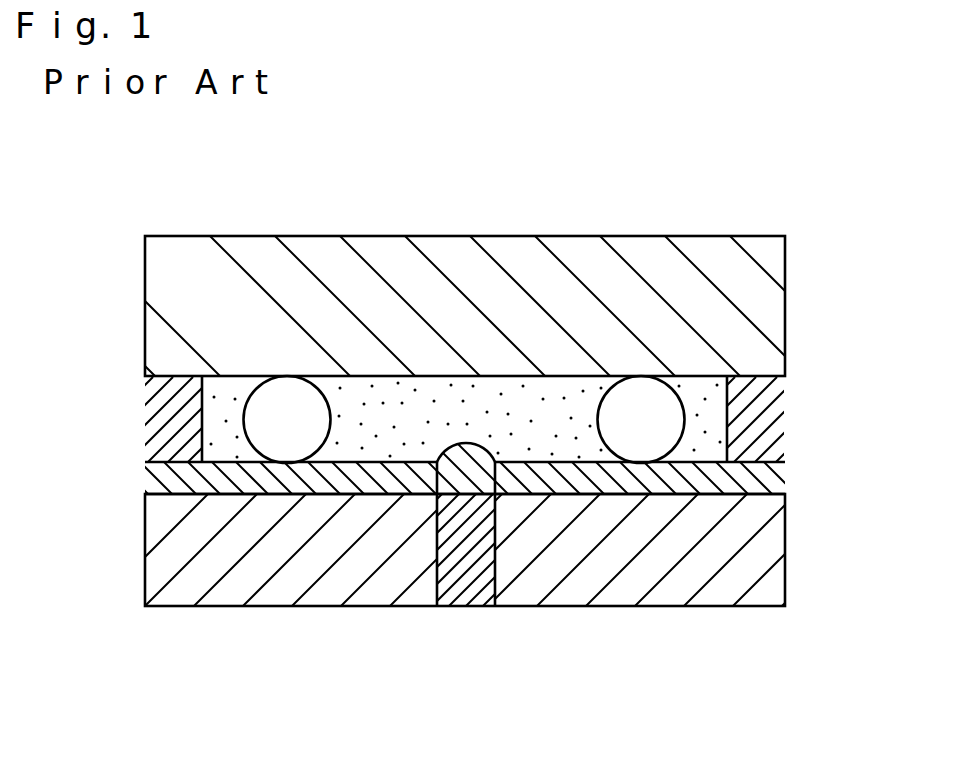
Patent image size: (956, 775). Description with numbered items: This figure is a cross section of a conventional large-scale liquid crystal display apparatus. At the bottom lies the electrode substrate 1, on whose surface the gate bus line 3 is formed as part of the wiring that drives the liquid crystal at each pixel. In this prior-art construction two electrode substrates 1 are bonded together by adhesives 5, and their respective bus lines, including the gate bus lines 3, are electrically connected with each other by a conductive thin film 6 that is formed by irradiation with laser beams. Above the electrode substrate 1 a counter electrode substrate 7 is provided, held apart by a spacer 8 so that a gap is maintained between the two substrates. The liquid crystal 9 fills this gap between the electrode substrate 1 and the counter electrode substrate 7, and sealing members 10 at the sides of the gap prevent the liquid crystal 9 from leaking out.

The electrode substrate 1 is at (145, 557).
The gate bus line 3 is at (145, 480).
The adhesives 5 is at (463, 607).
The conductive thin film 6 is at (468, 444).
The counter electrode substrate 7 is at (785, 284).
The spacer 8 is at (250, 391).
The liquid crystal 9 is at (351, 377).
The sealing members 10 is at (145, 419).